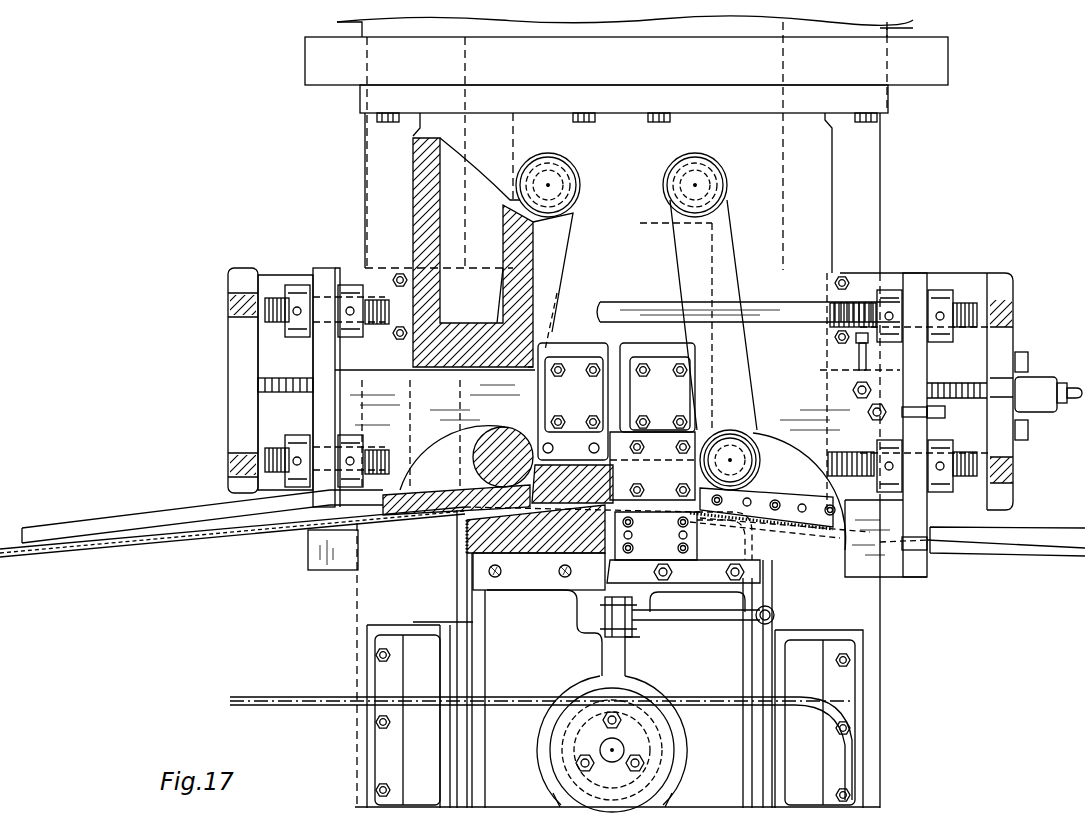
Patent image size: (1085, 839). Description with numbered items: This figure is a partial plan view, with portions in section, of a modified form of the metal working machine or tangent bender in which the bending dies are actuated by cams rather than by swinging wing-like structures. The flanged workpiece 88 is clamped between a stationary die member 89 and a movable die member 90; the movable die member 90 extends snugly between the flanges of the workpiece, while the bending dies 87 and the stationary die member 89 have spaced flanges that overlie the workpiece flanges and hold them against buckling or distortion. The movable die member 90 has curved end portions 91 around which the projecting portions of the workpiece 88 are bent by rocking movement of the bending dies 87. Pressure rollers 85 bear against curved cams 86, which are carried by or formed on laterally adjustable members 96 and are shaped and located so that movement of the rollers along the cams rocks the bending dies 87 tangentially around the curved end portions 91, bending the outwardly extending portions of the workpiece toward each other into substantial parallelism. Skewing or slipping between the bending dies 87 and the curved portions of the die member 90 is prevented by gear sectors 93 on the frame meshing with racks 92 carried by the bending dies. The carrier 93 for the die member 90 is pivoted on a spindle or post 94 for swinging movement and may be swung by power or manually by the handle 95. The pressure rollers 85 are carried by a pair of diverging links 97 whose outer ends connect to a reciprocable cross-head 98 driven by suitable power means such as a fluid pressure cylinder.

The pressure rollers 85 is at (475, 462).
The curved cams 86 is at (440, 455).
The bending dies 87 is at (428, 513).
The flanged workpiece 88 is at (150, 540).
The stationary die member 89 is at (552, 462).
The movable die member 90 is at (537, 548).
The curved end portions 91 is at (470, 530).
The racks 92 is at (803, 516).
The gear sectors 93 is at (480, 604).
The spindle or post 94 is at (652, 702).
The handle 95 is at (690, 618).
The laterally adjustable members 96 is at (347, 402).
The diverging links 97 is at (720, 238).
The reciprocable cross-head 98 is at (418, 190).